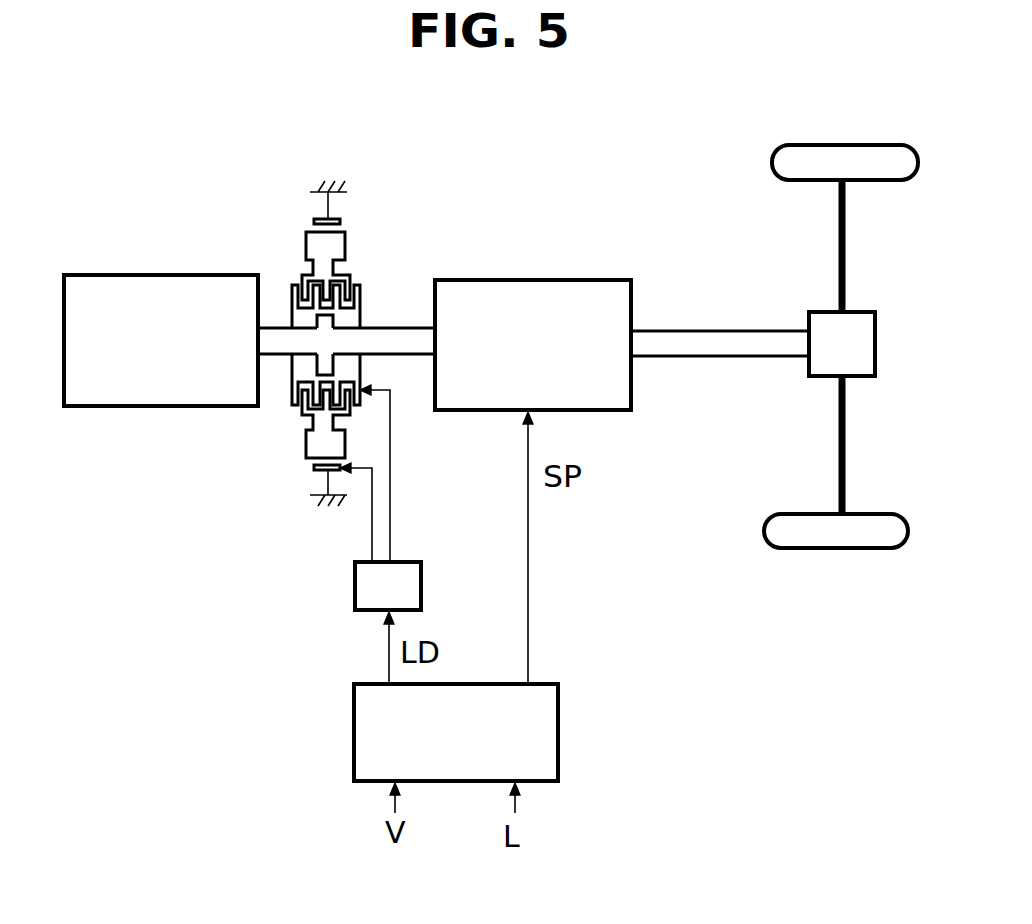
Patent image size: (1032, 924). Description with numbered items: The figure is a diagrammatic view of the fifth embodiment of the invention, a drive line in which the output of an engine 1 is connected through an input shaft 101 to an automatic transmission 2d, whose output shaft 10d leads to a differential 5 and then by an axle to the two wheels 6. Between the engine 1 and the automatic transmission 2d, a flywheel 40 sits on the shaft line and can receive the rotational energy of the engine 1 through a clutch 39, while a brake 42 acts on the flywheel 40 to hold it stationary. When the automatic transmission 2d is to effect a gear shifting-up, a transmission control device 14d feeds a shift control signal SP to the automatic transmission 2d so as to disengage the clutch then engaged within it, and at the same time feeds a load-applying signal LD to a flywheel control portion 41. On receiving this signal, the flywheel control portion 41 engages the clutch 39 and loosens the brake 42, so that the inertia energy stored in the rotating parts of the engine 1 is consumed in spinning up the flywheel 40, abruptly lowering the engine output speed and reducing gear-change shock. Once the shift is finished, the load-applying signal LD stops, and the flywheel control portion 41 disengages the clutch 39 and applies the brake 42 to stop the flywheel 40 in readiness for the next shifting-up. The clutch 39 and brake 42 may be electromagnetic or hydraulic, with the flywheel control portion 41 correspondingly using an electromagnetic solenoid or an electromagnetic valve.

The engine 1 is at (187, 272).
The input shaft 101 is at (398, 328).
The flywheel 40 is at (305, 243).
The brake 42 is at (333, 218).
The clutch 39 is at (352, 285).
The flywheel control portion 41 is at (353, 577).
The automatic transmission 2d is at (555, 277).
The output shaft 10d is at (725, 320).
The differential 5 is at (878, 343).
The wheels 6 is at (878, 143).
The transmission control device 14d is at (560, 727).